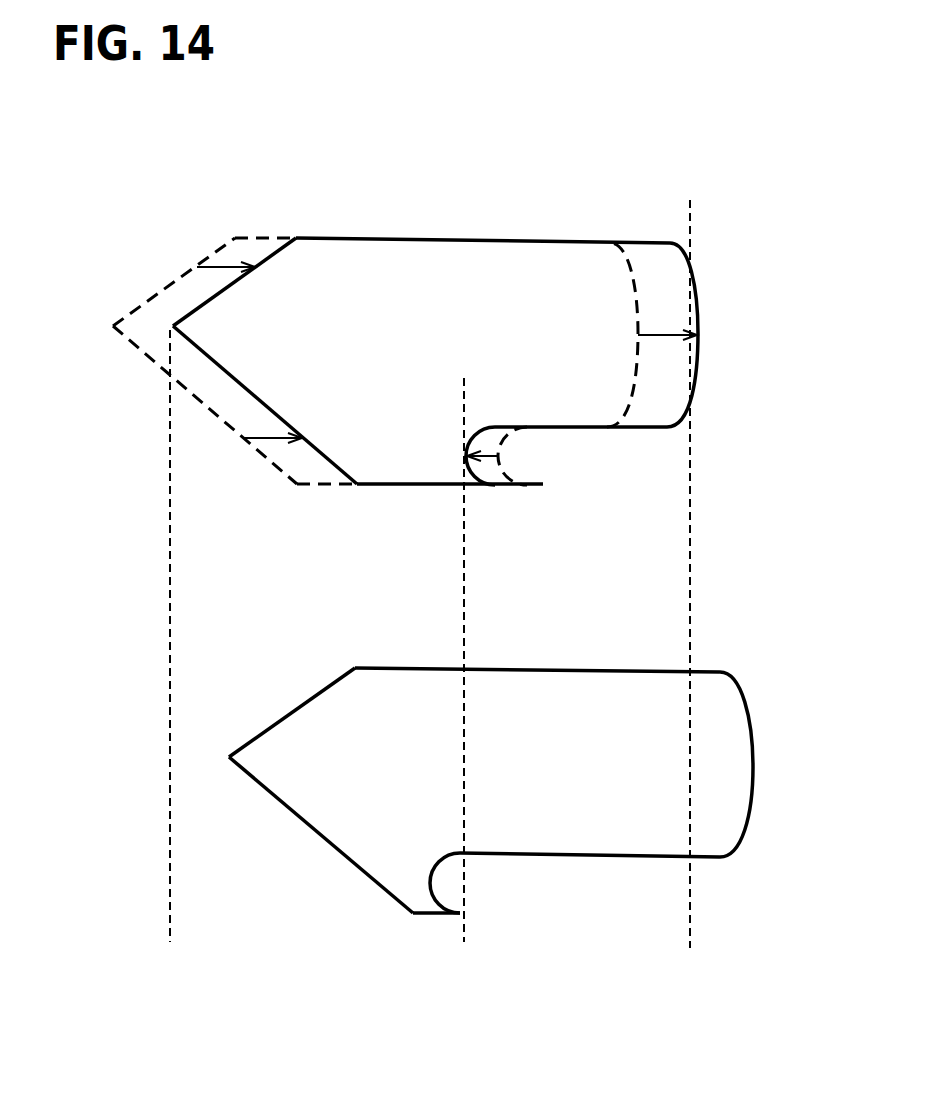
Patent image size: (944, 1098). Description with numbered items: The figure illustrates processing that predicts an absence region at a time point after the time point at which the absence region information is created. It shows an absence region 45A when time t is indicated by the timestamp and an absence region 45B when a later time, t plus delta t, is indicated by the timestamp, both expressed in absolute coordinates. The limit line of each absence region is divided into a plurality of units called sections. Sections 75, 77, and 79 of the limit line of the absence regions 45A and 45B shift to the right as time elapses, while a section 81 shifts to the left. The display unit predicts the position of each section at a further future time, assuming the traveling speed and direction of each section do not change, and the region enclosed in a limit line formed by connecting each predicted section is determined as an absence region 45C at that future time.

The absence region 45A is at (229, 241).
The absence region 45B is at (288, 246).
The absence region 45C is at (314, 698).
The section of the limit line 75 is at (167, 289).
The section of the limit line 77 is at (262, 398).
The section of the limit line 79 is at (633, 292).
The section of the limit line 81 is at (465, 452).